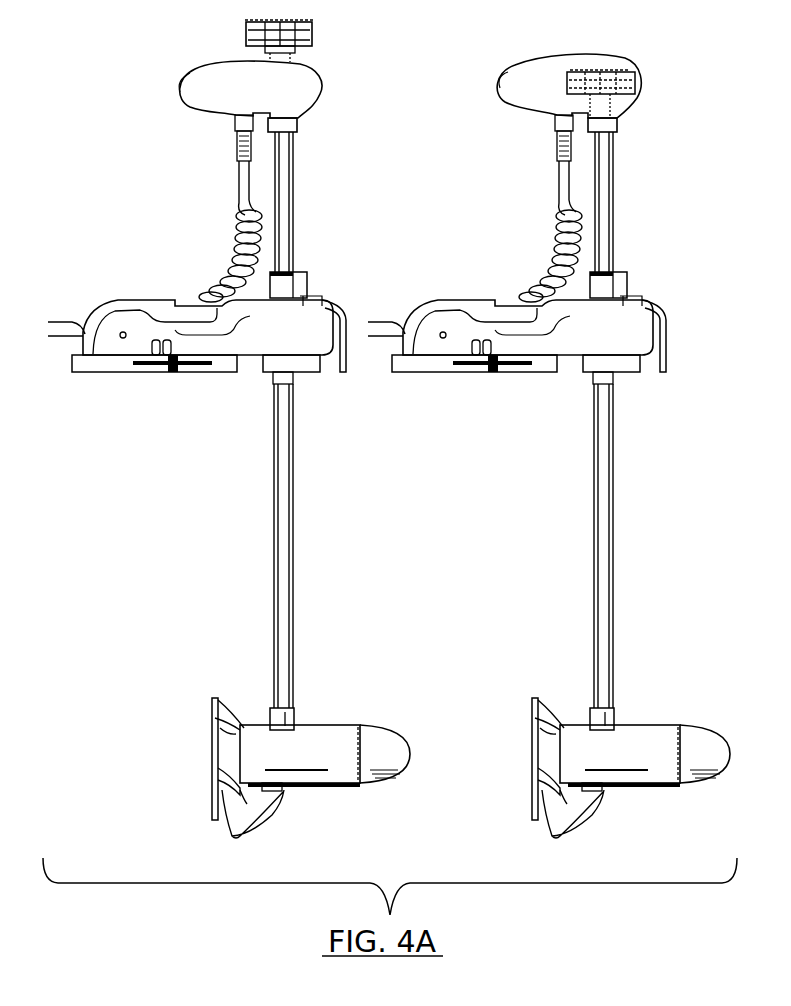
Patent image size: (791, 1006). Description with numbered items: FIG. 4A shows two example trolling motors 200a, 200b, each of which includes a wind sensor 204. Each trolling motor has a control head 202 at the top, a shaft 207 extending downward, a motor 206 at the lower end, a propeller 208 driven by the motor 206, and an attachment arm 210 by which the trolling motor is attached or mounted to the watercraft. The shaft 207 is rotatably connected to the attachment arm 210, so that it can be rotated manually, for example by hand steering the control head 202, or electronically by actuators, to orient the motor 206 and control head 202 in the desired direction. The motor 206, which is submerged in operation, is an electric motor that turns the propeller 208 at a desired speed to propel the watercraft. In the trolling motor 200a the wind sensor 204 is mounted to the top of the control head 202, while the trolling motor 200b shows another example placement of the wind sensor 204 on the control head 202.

The trolling motor 200a is at (148, 203).
The trolling motor 200b is at (480, 190).
The control head 202 is at (217, 103).
The wind sensor 204 is at (246, 23).
The motor 206 is at (338, 728).
The shaft 207 is at (274, 498).
The propeller 208 is at (213, 712).
The attachment arm 210 is at (91, 372).